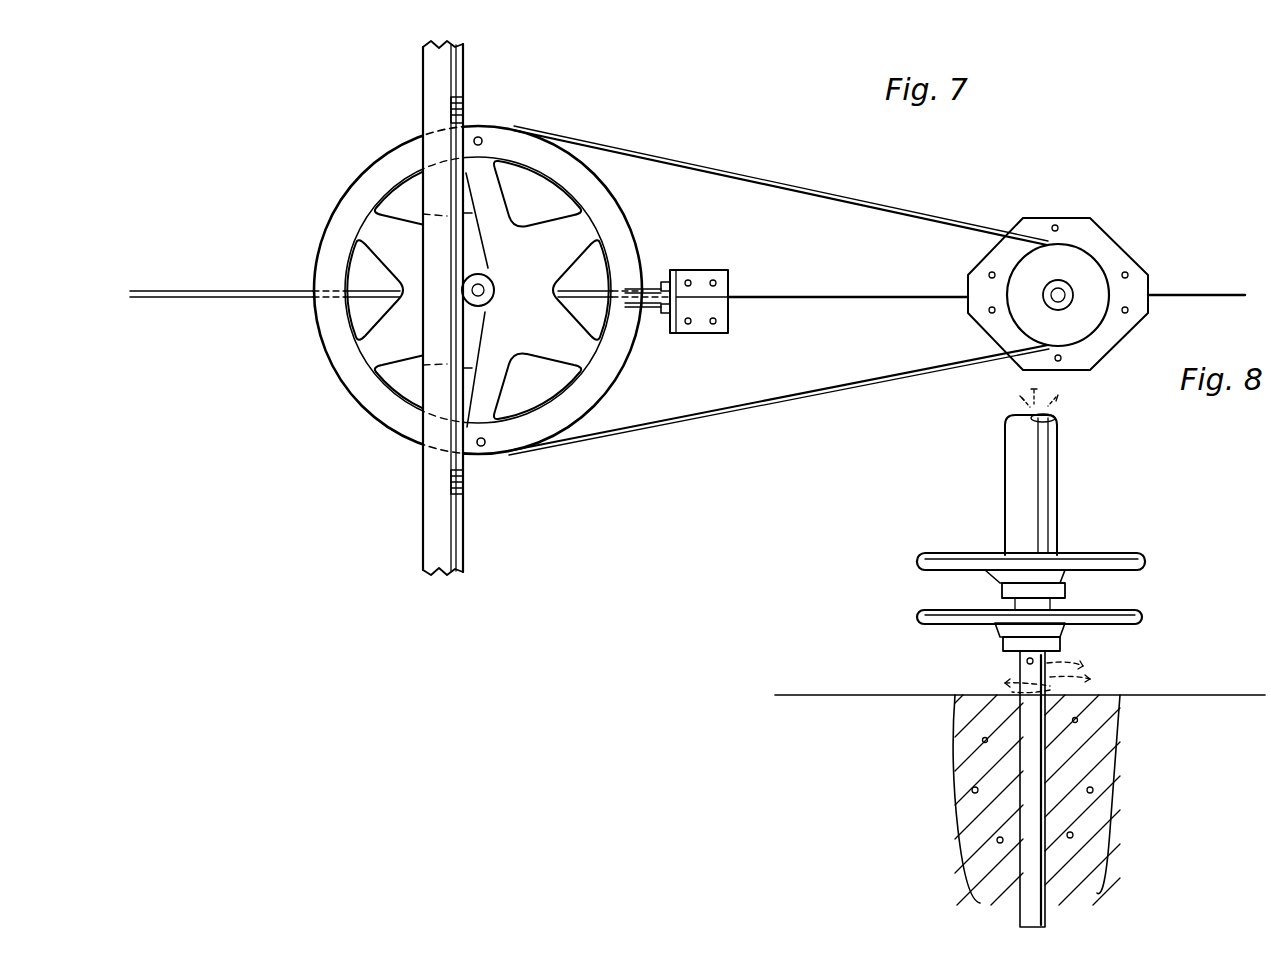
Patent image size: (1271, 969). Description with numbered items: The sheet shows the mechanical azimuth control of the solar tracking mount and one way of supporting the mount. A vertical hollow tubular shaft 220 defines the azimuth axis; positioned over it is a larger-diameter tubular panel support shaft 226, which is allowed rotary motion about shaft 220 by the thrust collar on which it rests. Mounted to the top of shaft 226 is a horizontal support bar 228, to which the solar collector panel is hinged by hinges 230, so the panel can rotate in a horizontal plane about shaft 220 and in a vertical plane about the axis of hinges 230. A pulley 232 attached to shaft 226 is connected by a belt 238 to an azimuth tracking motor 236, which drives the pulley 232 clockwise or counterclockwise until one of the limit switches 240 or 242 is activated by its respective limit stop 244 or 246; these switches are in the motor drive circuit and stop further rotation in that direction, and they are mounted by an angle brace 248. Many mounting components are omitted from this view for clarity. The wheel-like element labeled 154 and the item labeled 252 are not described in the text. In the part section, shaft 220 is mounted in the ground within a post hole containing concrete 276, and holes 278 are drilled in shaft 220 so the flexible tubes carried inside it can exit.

In FIG. 7, the drive wheel 154 is at (433, 382).
In FIG. 7, the shaft 220 is at (494, 293).
In FIG. 8, the shaft 220 is at (1030, 704).
In FIG. 8, the tubular panel support shaft 226 is at (1056, 603).
In FIG. 7, the horizontal support bar 228 is at (463, 99).
In FIG. 7, the hinges 230 is at (450, 483).
In FIG. 7, the pulley 232 is at (576, 178).
In FIG. 7, the azimuth tracking motor 236 is at (1100, 254).
In FIG. 7, the belt 238 is at (900, 216).
In FIG. 7, the limit switch 240 is at (665, 282).
In FIG. 7, the limit switch 242 is at (665, 313).
In FIG. 7, the limit stop 244 is at (479, 137).
In FIG. 7, the limit stop 246 is at (483, 446).
In FIG. 7, the angle brace 248 is at (722, 290).
In FIG. 8, the vertical tube 252 is at (1042, 501).
In FIG. 8, the concrete 276 is at (1094, 783).
In FIG. 8, the holes 278 is at (1050, 661).